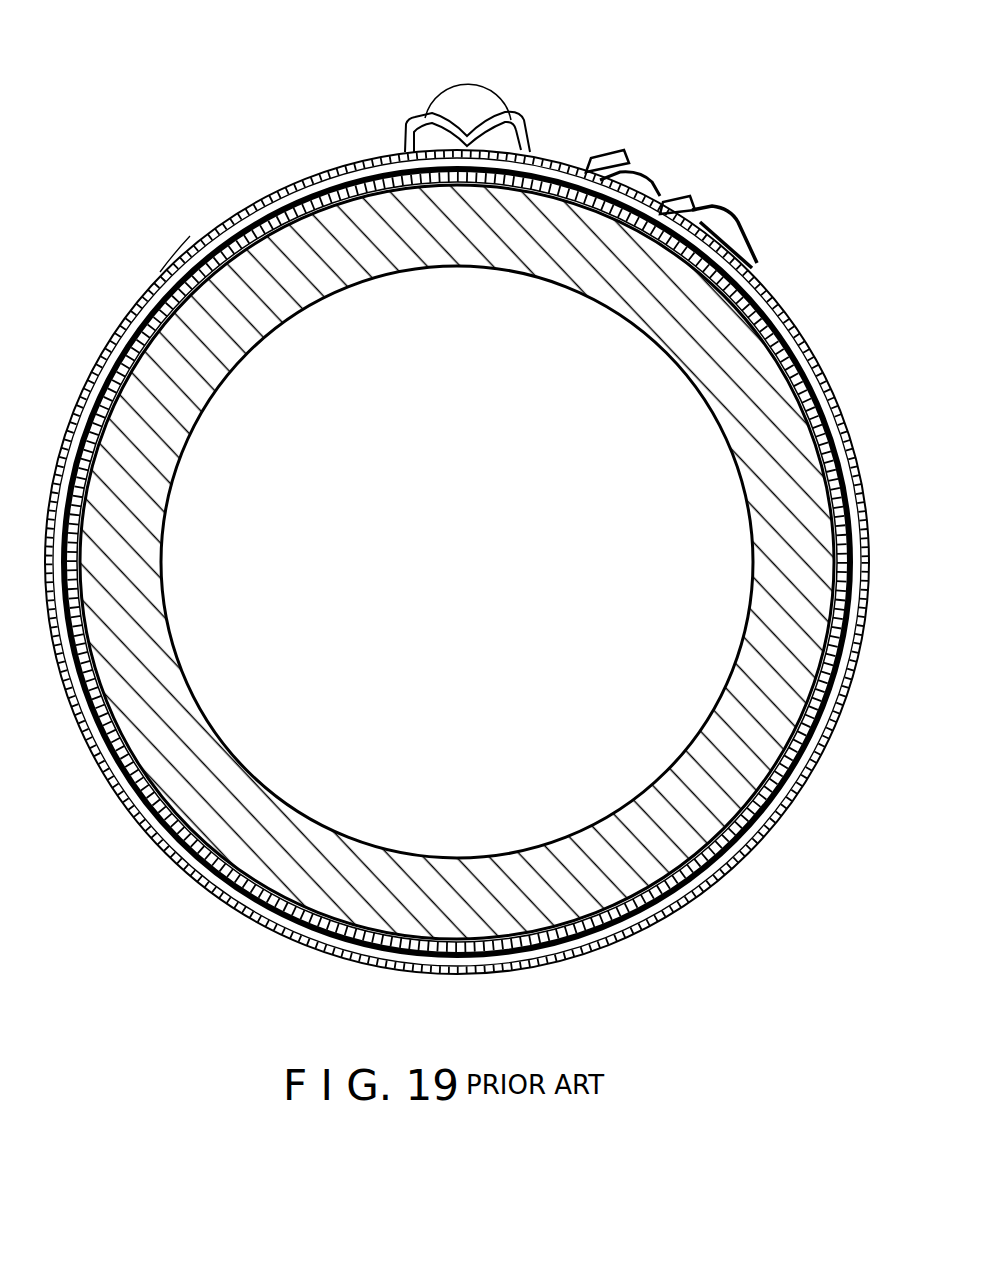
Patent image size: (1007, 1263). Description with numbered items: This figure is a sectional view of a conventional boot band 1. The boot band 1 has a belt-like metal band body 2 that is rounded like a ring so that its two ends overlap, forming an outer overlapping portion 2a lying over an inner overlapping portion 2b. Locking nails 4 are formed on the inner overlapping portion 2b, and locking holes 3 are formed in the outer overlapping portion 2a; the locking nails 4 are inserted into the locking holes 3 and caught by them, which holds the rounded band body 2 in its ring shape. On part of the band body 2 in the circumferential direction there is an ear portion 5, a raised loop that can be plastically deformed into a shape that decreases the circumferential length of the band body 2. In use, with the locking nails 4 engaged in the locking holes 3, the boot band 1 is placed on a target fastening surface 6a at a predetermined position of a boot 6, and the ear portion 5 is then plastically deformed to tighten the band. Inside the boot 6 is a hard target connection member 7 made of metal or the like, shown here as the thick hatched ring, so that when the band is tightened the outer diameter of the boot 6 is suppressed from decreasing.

The boot band 1 is at (791, 110).
The band body 2 is at (461, 530).
The outer overlapping portion 2a is at (348, 162).
The inner overlapping portion 2b is at (478, 144).
The locking holes 3 is at (568, 152).
The locking nails 4 is at (610, 166).
The ear portion 5 is at (494, 106).
The boot 6 is at (457, 562).
The target fastening surface 6a is at (172, 262).
The target connection member 7 is at (702, 376).